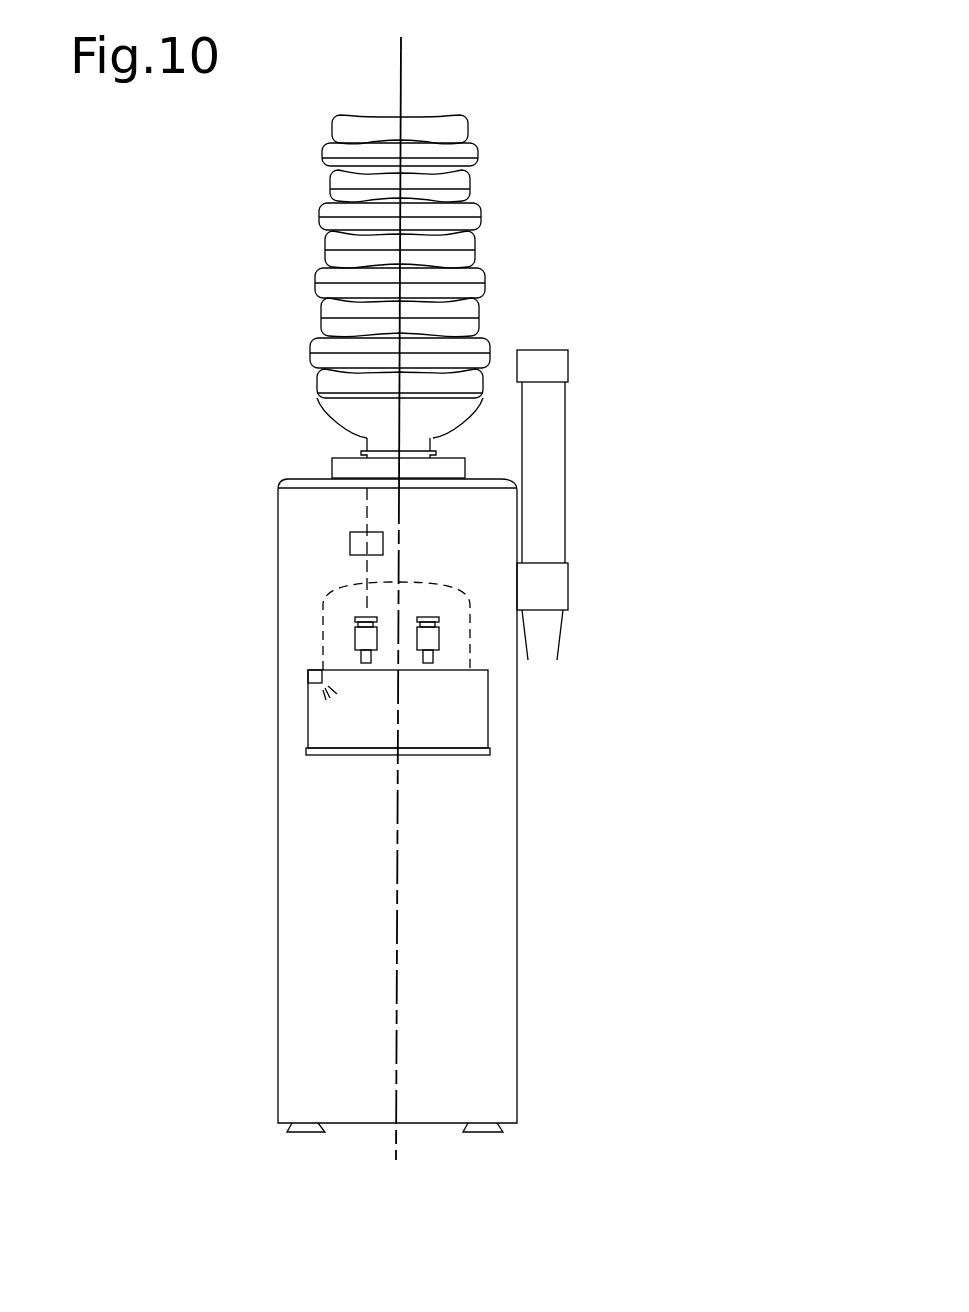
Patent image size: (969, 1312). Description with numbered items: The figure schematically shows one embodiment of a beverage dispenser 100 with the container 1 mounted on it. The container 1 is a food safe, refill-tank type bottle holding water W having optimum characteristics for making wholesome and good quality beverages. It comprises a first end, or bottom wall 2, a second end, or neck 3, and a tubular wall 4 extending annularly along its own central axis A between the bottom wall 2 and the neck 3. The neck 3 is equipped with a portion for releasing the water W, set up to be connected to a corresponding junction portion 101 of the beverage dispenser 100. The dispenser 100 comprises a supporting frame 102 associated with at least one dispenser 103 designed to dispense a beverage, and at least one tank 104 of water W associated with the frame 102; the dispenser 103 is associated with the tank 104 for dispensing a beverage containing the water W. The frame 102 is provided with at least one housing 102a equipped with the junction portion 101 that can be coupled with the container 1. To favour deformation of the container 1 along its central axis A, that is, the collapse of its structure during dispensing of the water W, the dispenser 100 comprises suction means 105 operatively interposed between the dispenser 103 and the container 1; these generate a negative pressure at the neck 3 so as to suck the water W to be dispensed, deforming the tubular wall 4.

The central axis A is at (400, 83).
The container 1 is at (406, 257).
The bottom wall 2 is at (463, 118).
The neck 3 is at (362, 438).
The tubular wall 4 is at (322, 267).
The water W is at (350, 179).
The beverage dispenser 100 is at (411, 741).
The junction portion 101 is at (360, 467).
The supporting frame 102 is at (277, 829).
The housing 102a is at (331, 468).
The dispenser 103 is at (368, 642).
The tank 104 is at (477, 300).
The suction means 105 is at (350, 542).